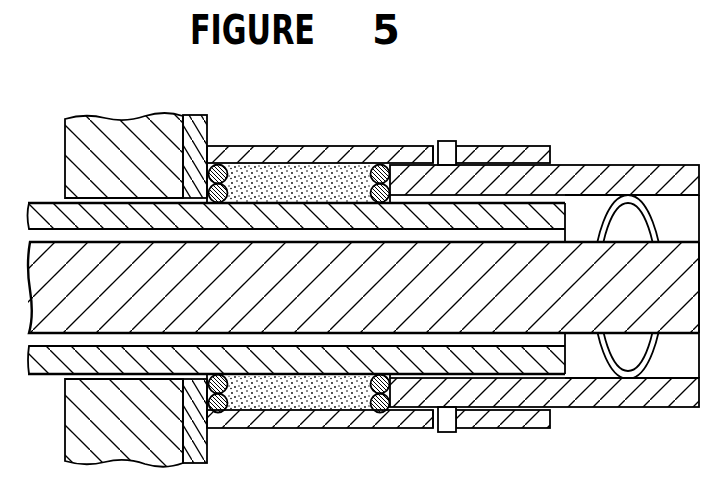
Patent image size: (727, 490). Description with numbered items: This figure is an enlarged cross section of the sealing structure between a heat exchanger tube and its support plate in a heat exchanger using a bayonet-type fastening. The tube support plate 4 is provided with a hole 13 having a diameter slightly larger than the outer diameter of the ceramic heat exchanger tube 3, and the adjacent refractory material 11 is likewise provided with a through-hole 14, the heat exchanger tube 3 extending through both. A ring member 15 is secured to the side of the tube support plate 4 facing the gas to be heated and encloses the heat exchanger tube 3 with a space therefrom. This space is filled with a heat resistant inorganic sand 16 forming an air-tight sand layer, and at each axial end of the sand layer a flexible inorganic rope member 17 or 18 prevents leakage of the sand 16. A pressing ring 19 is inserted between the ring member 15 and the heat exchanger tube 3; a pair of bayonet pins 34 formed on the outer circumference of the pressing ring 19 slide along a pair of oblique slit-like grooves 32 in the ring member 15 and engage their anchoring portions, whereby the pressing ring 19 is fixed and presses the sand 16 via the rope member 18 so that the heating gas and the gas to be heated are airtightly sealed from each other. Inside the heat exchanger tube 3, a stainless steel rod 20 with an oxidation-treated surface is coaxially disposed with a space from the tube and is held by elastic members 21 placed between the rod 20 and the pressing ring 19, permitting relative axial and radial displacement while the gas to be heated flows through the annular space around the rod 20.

The heat exchanger tube 3 is at (280, 212).
The tube support plate 4 is at (207, 128).
The refractory material 11 is at (137, 170).
The hole 13 is at (193, 193).
The through-hole 14 is at (122, 194).
The ring member 15 is at (360, 157).
The heat resistant inorganic sand 16 is at (313, 187).
The rope member 17 is at (226, 166).
The rope member 18 is at (388, 160).
The pressing ring 19 is at (563, 180).
The stainless steel rod 20 is at (572, 268).
The elastic members 21 is at (655, 217).
The slit-like groove 32 is at (470, 147).
The bayonet pin 34 is at (447, 140).